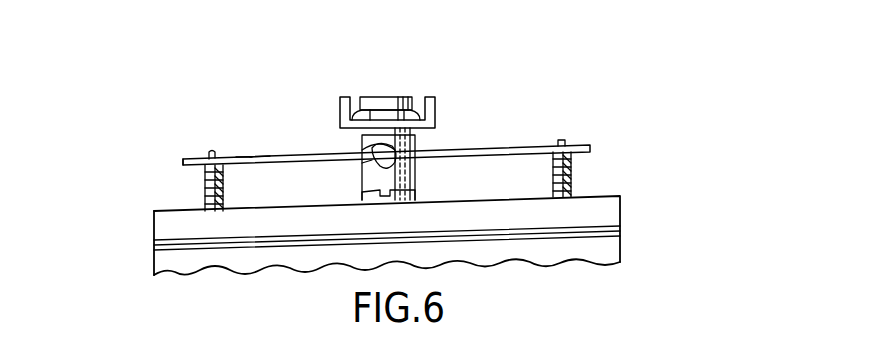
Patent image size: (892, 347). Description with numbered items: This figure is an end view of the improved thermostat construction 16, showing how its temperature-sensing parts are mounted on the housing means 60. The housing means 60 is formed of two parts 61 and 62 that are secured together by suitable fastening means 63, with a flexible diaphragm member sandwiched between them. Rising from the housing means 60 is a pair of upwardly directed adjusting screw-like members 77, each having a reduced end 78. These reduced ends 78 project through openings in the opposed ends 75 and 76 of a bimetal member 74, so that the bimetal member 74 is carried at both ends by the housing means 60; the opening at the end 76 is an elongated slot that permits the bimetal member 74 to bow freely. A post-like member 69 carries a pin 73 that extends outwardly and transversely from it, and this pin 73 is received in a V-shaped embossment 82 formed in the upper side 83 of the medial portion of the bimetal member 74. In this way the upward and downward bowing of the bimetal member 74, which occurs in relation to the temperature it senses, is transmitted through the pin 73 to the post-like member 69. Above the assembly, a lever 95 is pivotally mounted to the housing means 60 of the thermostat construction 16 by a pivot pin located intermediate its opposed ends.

The thermostat construction 16 is at (668, 130).
The housing means 60 is at (614, 245).
The housing part 61 is at (590, 262).
The housing part 62 is at (612, 211).
The fastening means 63 is at (362, 196).
The post-like member 69 is at (420, 141).
The pin 73 is at (372, 145).
The bimetal member 74 is at (242, 158).
The end of bimetal member 75 is at (583, 145).
The end of bimetal member 76 is at (183, 159).
The adjusting screw-like members 77 is at (205, 184).
The reduced ends 78 is at (209, 150).
The V-shaped embossment 82 is at (398, 168).
The upper side 83 is at (255, 158).
The lever 95 is at (435, 102).